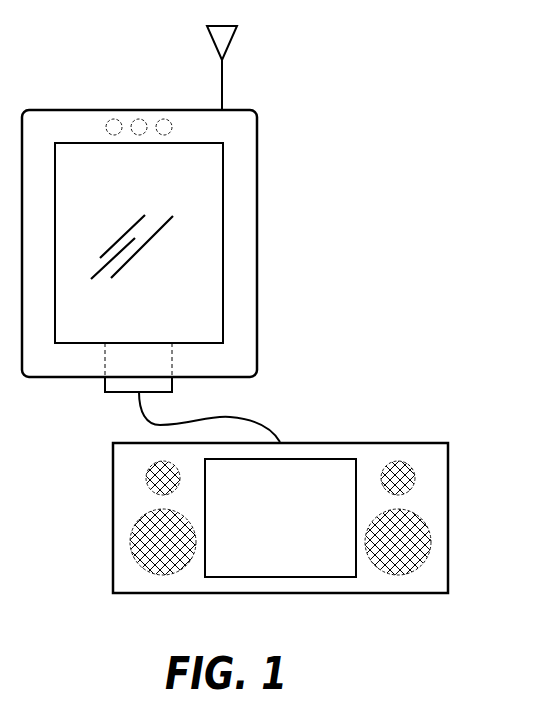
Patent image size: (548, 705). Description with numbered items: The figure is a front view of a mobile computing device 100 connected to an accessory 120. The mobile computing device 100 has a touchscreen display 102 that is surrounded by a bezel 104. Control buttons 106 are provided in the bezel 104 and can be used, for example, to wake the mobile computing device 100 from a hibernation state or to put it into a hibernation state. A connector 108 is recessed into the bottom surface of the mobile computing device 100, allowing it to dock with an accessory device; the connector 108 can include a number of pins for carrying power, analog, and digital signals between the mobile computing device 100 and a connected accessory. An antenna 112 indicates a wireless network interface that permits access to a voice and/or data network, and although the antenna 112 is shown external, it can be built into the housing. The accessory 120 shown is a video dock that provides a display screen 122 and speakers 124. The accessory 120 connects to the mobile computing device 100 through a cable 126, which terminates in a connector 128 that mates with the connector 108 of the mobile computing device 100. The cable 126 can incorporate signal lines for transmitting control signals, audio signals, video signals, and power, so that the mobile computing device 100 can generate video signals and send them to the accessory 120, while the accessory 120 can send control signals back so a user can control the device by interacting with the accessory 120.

The mobile computing device 100 is at (257, 142).
The touchscreen display 102 is at (139, 243).
The bezel 104 is at (238, 208).
The control buttons 106 is at (160, 117).
The connector 108 is at (123, 360).
The antenna 112 is at (232, 43).
The accessory 120 is at (323, 442).
The display screen 122 is at (280, 518).
The speakers 124 is at (130, 542).
The cable 126 is at (258, 418).
The connector 128 is at (117, 393).